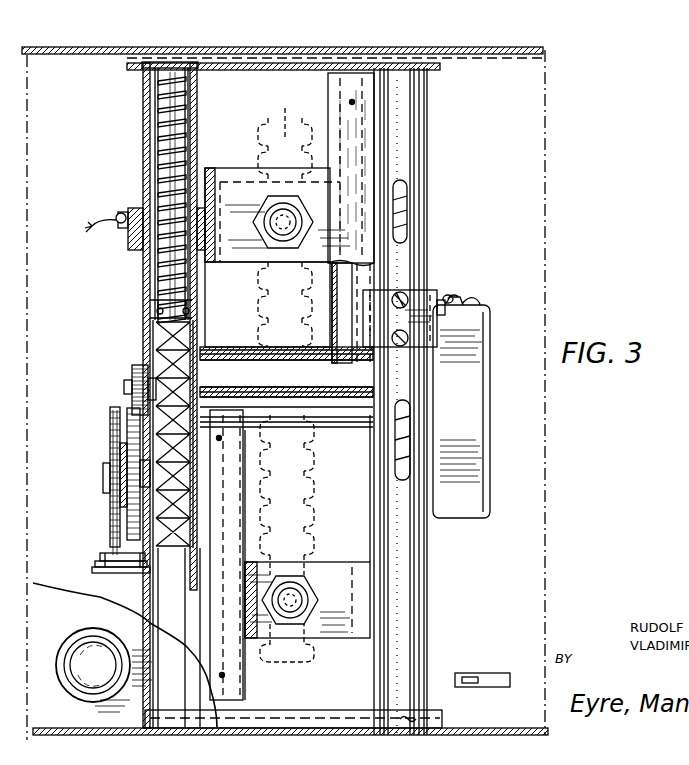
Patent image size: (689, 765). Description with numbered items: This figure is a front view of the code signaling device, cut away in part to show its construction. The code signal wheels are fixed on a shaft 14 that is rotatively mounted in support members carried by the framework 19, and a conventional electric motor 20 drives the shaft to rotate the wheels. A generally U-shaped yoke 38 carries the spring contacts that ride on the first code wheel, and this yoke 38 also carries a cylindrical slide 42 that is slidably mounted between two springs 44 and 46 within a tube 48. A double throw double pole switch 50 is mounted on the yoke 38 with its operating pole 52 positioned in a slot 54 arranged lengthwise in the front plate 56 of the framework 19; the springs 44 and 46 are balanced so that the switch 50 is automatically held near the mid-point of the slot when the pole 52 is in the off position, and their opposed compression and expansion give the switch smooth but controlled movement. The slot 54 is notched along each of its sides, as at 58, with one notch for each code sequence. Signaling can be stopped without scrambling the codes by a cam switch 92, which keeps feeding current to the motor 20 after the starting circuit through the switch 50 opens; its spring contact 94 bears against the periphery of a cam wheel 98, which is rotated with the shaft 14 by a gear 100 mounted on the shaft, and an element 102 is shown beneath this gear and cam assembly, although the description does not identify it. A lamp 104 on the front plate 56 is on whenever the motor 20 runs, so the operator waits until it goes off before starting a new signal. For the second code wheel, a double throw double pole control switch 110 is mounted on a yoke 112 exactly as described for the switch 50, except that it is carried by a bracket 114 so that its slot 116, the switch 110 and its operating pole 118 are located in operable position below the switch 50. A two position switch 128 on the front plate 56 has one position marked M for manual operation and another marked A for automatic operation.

The shaft 14 is at (348, 420).
The framework 19 is at (518, 728).
The electric motor 20 is at (480, 393).
The yoke 38 is at (140, 250).
The cylindrical slide 42 is at (152, 172).
The spring 44 is at (157, 107).
The spring 46 is at (156, 325).
The tube 48 is at (146, 282).
The double throw double pole switch 50 is at (247, 170).
The operating pole 52 is at (280, 221).
The slot 54 is at (285, 133).
The front plate 56 is at (528, 168).
The notch 58 is at (266, 320).
The cam switch 92 is at (100, 422).
The spring contact 94 is at (108, 548).
The cam wheel 98 is at (117, 505).
The gear 100 is at (133, 368).
The mounting plate 102 is at (100, 565).
The lamp 104 is at (82, 640).
The double throw double pole control switch 110 is at (335, 640).
The yoke 112 is at (433, 290).
The bracket 114 is at (370, 515).
The slot 116 is at (287, 653).
The operating pole 118 is at (296, 602).
The two position switch 128 is at (472, 675).